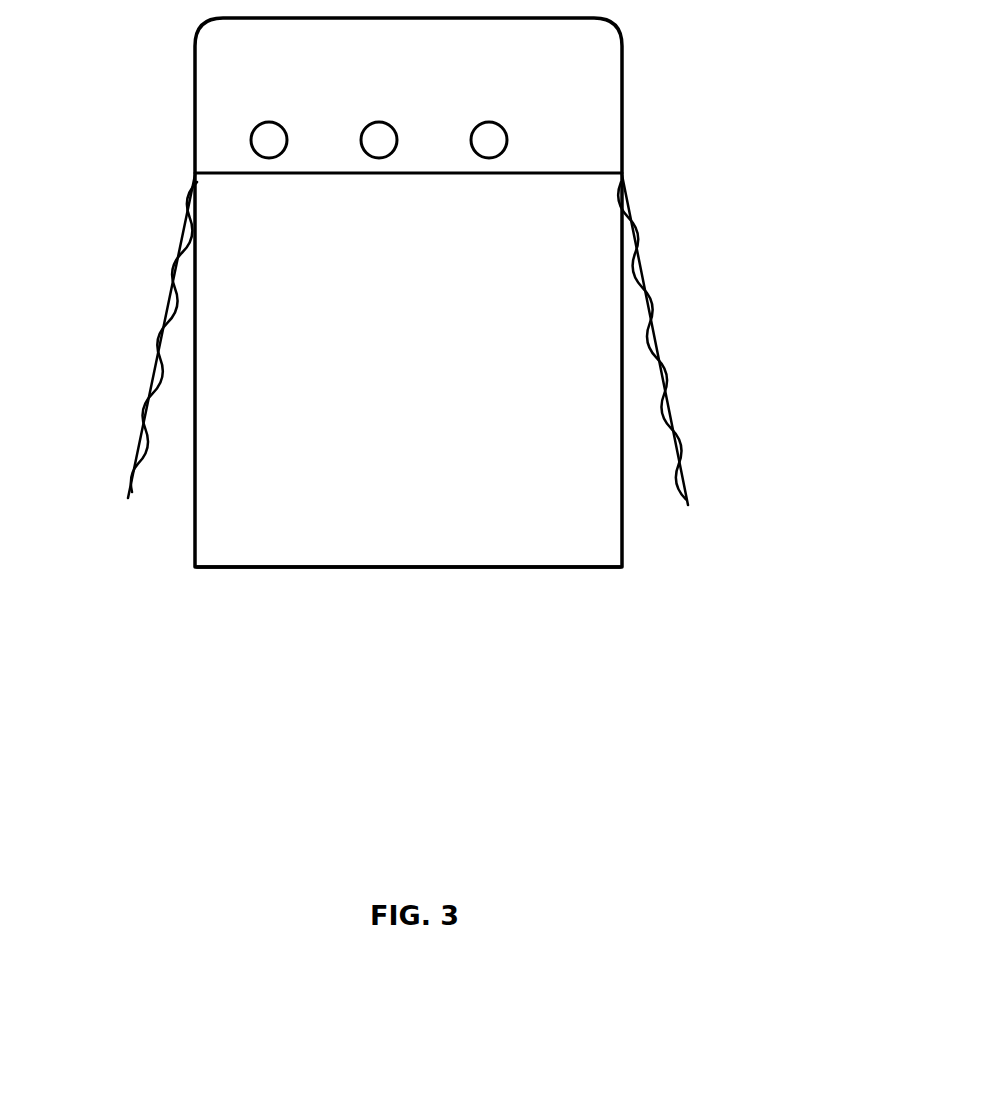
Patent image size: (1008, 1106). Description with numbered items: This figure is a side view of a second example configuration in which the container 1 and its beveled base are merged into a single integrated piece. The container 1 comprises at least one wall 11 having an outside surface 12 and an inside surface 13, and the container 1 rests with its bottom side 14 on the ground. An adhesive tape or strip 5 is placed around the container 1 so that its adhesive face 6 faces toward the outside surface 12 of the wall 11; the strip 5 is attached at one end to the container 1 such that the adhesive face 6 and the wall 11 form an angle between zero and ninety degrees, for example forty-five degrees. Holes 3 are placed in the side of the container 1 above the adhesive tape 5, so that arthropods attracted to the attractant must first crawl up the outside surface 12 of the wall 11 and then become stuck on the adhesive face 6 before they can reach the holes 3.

The container 1 is at (259, 278).
The holes 3 is at (296, 122).
The adhesive tape or strip 5 is at (134, 395).
The adhesive face 6 is at (158, 440).
The wall 11 is at (178, 300).
The outside surface 12 is at (654, 376).
The inside surface 13 is at (614, 380).
The bottom side 14 is at (454, 580).